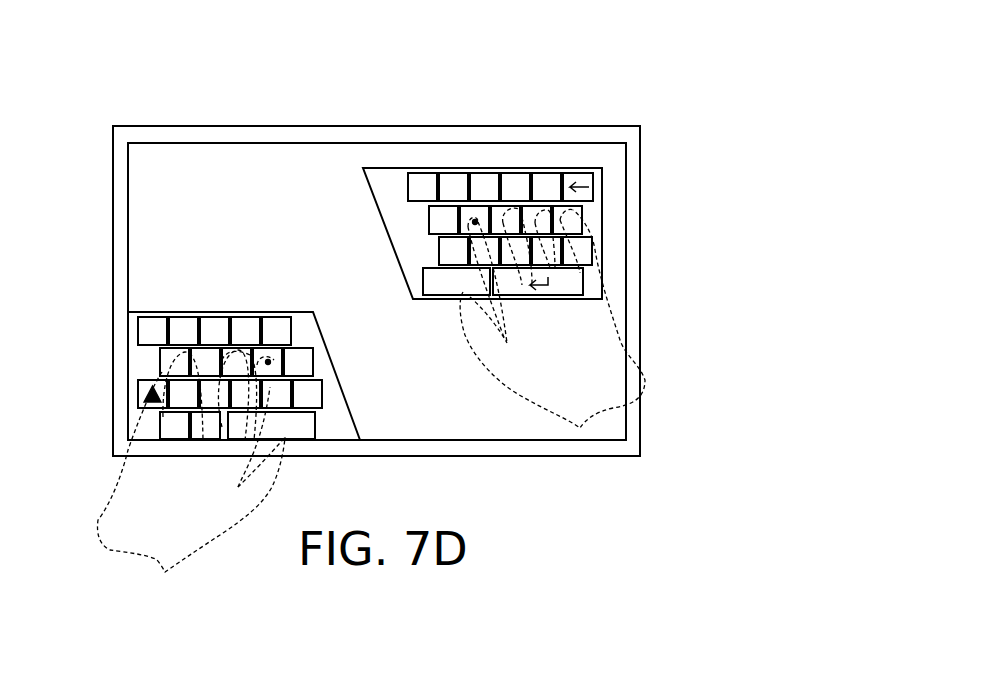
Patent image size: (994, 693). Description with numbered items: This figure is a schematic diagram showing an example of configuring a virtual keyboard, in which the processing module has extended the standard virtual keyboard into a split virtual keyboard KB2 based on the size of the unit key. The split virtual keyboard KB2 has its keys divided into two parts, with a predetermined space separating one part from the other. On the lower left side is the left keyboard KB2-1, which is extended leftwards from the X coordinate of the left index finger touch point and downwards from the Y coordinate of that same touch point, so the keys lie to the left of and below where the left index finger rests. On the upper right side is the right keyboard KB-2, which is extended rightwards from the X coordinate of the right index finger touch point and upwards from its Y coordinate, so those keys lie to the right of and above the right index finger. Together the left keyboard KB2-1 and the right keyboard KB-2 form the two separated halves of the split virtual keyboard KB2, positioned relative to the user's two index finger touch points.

The split virtual keyboard KB2 is at (433, 80).
The left keyboard KB2-1 is at (220, 300).
The right keyboard KB-2 is at (456, 162).